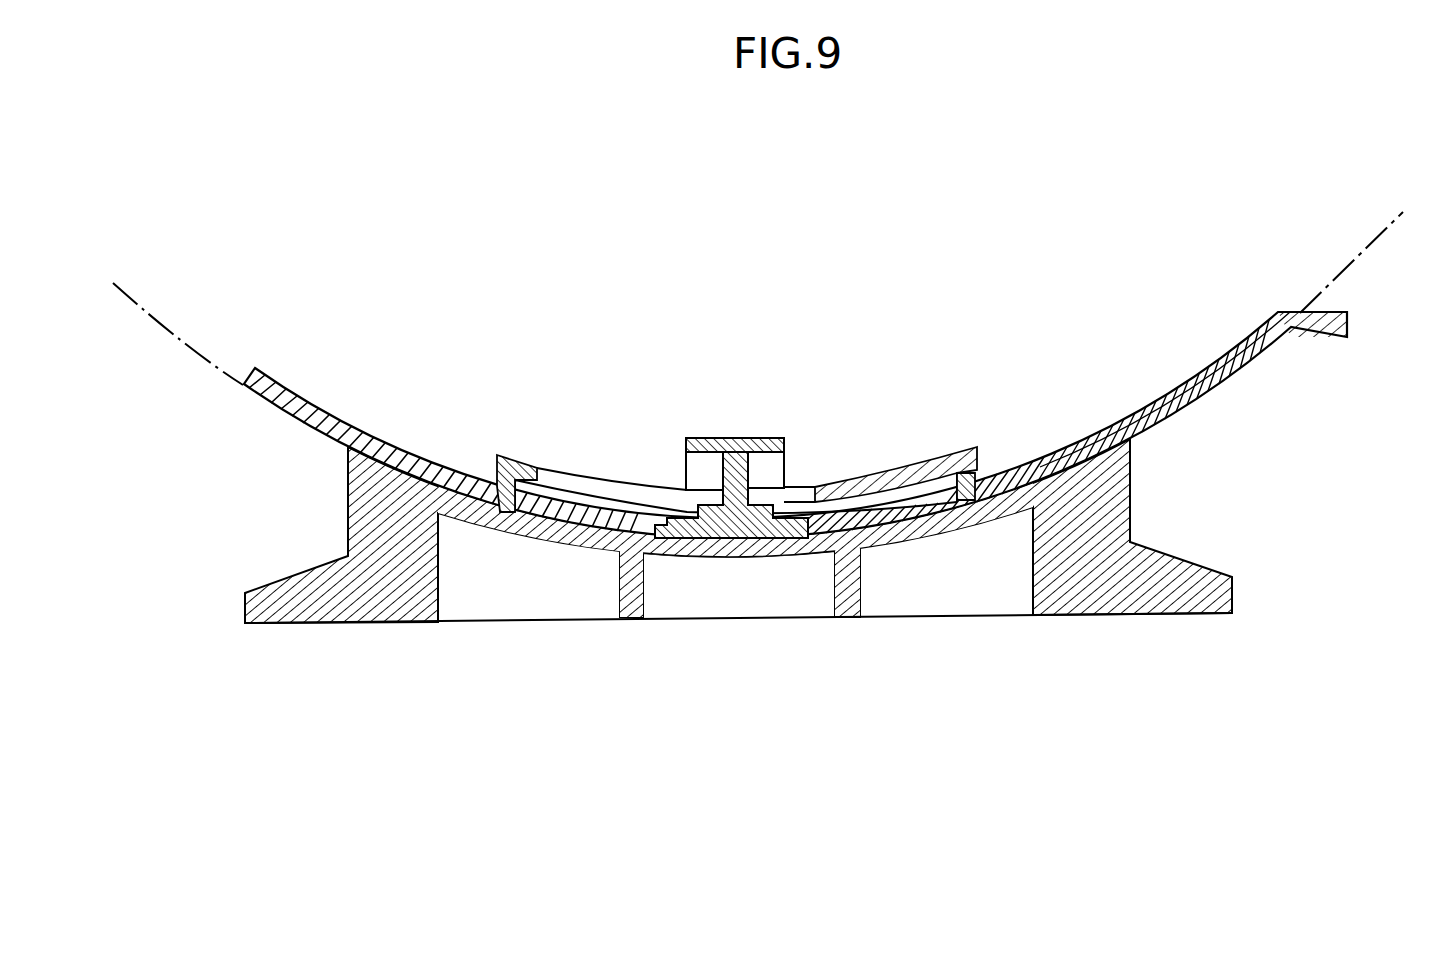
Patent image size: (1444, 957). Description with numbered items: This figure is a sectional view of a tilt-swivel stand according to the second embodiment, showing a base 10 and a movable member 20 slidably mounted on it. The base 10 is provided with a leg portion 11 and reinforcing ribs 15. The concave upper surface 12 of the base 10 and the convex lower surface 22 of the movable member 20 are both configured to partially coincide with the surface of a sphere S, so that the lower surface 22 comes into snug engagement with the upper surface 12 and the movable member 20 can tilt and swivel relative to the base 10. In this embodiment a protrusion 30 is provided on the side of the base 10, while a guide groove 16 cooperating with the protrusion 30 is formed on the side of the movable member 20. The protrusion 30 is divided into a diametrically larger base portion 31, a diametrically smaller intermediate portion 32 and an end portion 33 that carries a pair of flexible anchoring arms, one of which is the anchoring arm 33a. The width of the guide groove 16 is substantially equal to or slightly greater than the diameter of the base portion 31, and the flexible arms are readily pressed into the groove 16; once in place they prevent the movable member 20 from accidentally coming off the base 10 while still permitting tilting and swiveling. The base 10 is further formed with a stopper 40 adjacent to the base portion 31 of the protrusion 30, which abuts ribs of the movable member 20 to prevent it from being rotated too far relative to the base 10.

The base 10 is at (945, 622).
The leg portion 11 is at (1205, 563).
The concave upper surface 12 is at (1010, 470).
The reinforcing ribs 15 is at (617, 590).
The guide groove 16 is at (572, 482).
The movable member 20 is at (1103, 413).
The convex lower surface 22 is at (1190, 395).
The protrusion 30 is at (747, 423).
The base portion 31 is at (805, 498).
The intermediate portion 32 is at (686, 472).
The end portion 33 is at (702, 422).
The flexible anchoring arm 33a is at (790, 468).
The stopper 40 is at (650, 512).
The sphere S is at (1357, 265).